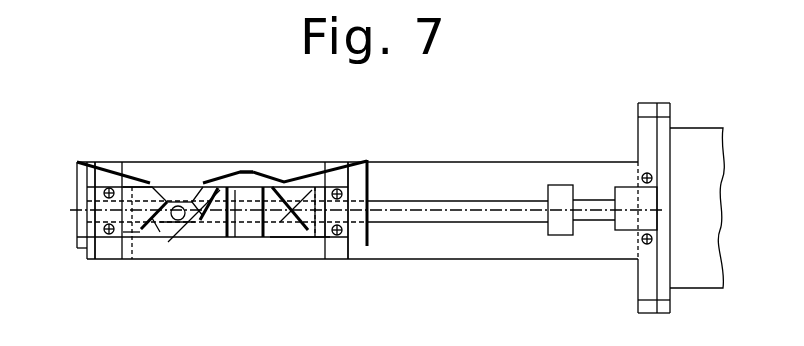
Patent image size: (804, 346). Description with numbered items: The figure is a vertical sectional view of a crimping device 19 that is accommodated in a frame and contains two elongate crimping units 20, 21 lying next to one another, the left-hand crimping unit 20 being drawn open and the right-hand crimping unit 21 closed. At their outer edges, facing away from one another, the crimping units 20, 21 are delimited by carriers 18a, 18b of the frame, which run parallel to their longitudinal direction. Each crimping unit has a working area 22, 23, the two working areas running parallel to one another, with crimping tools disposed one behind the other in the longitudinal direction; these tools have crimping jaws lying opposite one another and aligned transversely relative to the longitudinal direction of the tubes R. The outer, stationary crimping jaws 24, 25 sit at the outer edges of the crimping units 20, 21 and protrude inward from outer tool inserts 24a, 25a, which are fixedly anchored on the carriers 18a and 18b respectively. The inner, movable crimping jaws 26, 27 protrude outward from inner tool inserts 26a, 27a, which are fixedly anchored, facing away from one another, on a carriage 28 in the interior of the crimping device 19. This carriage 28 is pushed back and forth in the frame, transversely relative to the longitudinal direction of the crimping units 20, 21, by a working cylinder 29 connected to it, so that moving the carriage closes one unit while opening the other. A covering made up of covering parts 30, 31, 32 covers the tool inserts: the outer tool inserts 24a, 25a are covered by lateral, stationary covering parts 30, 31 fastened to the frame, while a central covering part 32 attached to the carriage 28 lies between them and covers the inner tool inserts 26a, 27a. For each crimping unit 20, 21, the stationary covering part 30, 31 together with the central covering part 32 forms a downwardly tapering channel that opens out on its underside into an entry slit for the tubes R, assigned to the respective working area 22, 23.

The crimping device 19 is at (384, 133).
The carrier 18a is at (107, 248).
The carrier 18b is at (340, 243).
The crimping unit 20 is at (178, 240).
The crimping unit 21 is at (299, 247).
The working area 22 is at (178, 183).
The working area 23 is at (291, 173).
The outer stationary crimping jaw 24 is at (146, 185).
The outer tool insert 24a is at (126, 238).
The outer stationary crimping jaw 25 is at (316, 185).
The outer tool insert 25a is at (323, 238).
The inner movable crimping jaw 26 is at (212, 185).
The inner tool insert 26a is at (223, 240).
The inner movable crimping jaw 27 is at (272, 185).
The inner tool insert 27a is at (266, 238).
The carriage 28 is at (247, 213).
The working cylinder 29 is at (625, 223).
The lateral stationary covering part 30 is at (100, 170).
The lateral stationary covering part 31 is at (349, 166).
The central covering part 32 is at (244, 170).
The tubes R is at (174, 229).